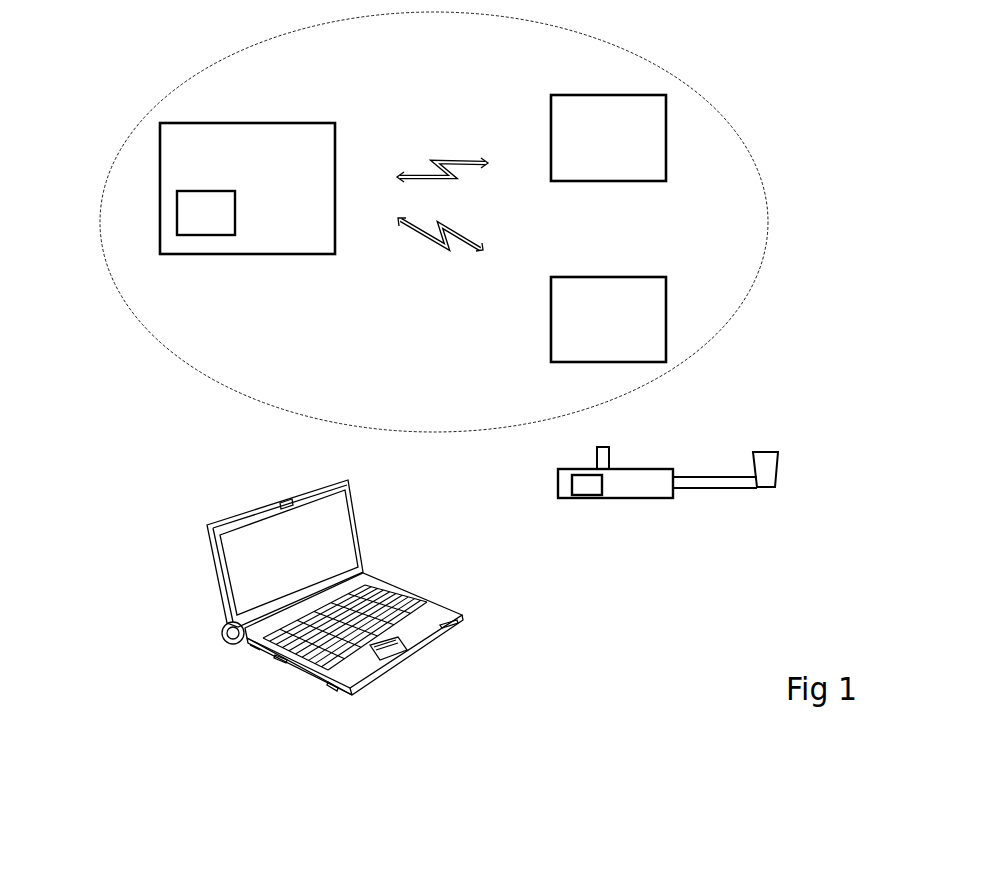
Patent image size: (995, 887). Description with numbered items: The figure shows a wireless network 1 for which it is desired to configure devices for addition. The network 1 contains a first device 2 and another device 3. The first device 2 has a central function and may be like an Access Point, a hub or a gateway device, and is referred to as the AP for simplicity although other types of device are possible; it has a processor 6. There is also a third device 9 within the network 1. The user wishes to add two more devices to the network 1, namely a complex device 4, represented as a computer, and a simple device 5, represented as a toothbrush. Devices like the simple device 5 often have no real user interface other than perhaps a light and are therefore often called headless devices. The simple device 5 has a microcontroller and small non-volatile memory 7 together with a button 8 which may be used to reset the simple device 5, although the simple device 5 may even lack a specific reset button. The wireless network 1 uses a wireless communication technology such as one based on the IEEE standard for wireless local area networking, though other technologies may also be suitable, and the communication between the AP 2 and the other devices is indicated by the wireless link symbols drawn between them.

The wireless network 1 is at (148, 430).
The first device 2 is at (182, 126).
The another device 3 is at (640, 127).
The complex device 4 is at (278, 658).
The simple device 5 is at (668, 497).
The processor 6 is at (212, 207).
The microcontroller and small non-volatile memory 7 is at (582, 487).
The button 8 is at (607, 463).
The third device 9 is at (624, 300).